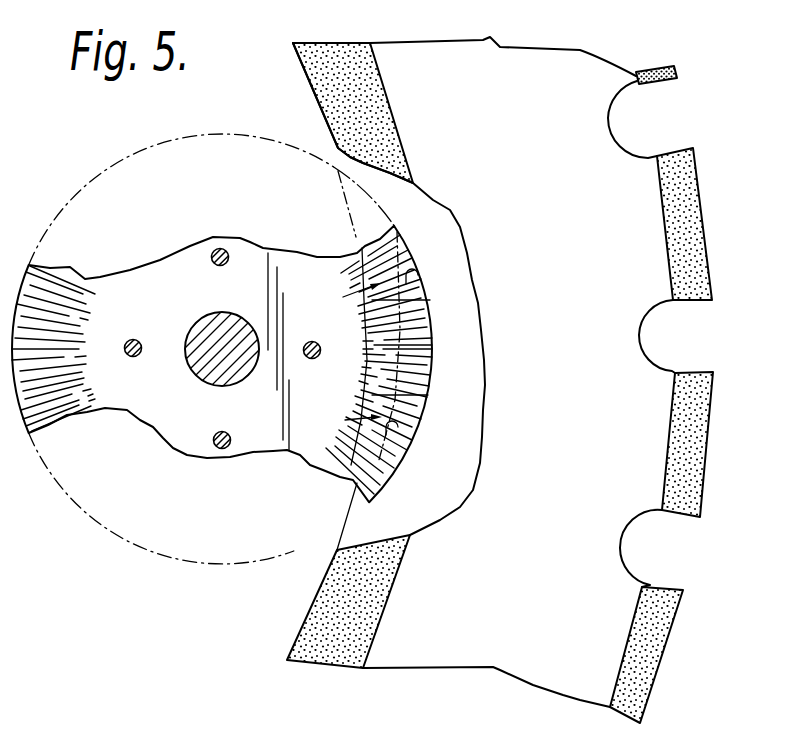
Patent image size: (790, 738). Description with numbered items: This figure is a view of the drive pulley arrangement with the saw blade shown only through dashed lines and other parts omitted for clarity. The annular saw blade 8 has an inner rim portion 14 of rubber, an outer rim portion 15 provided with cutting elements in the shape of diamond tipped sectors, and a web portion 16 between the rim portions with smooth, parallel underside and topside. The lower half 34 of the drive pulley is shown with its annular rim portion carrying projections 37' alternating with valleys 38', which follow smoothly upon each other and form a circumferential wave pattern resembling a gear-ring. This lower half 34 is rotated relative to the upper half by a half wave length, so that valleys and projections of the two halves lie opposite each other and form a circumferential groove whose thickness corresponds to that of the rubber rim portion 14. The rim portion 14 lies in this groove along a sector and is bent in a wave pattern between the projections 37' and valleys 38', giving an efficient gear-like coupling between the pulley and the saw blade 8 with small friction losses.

The annular saw blade 8 is at (596, 55).
The inner rim portion 14 is at (334, 57).
The outer rim portion 15 is at (692, 234).
The web portion 16 is at (509, 57).
The lower half of the drive pulley 34 is at (155, 147).
The projections 37' is at (439, 363).
The valleys 38' is at (460, 346).